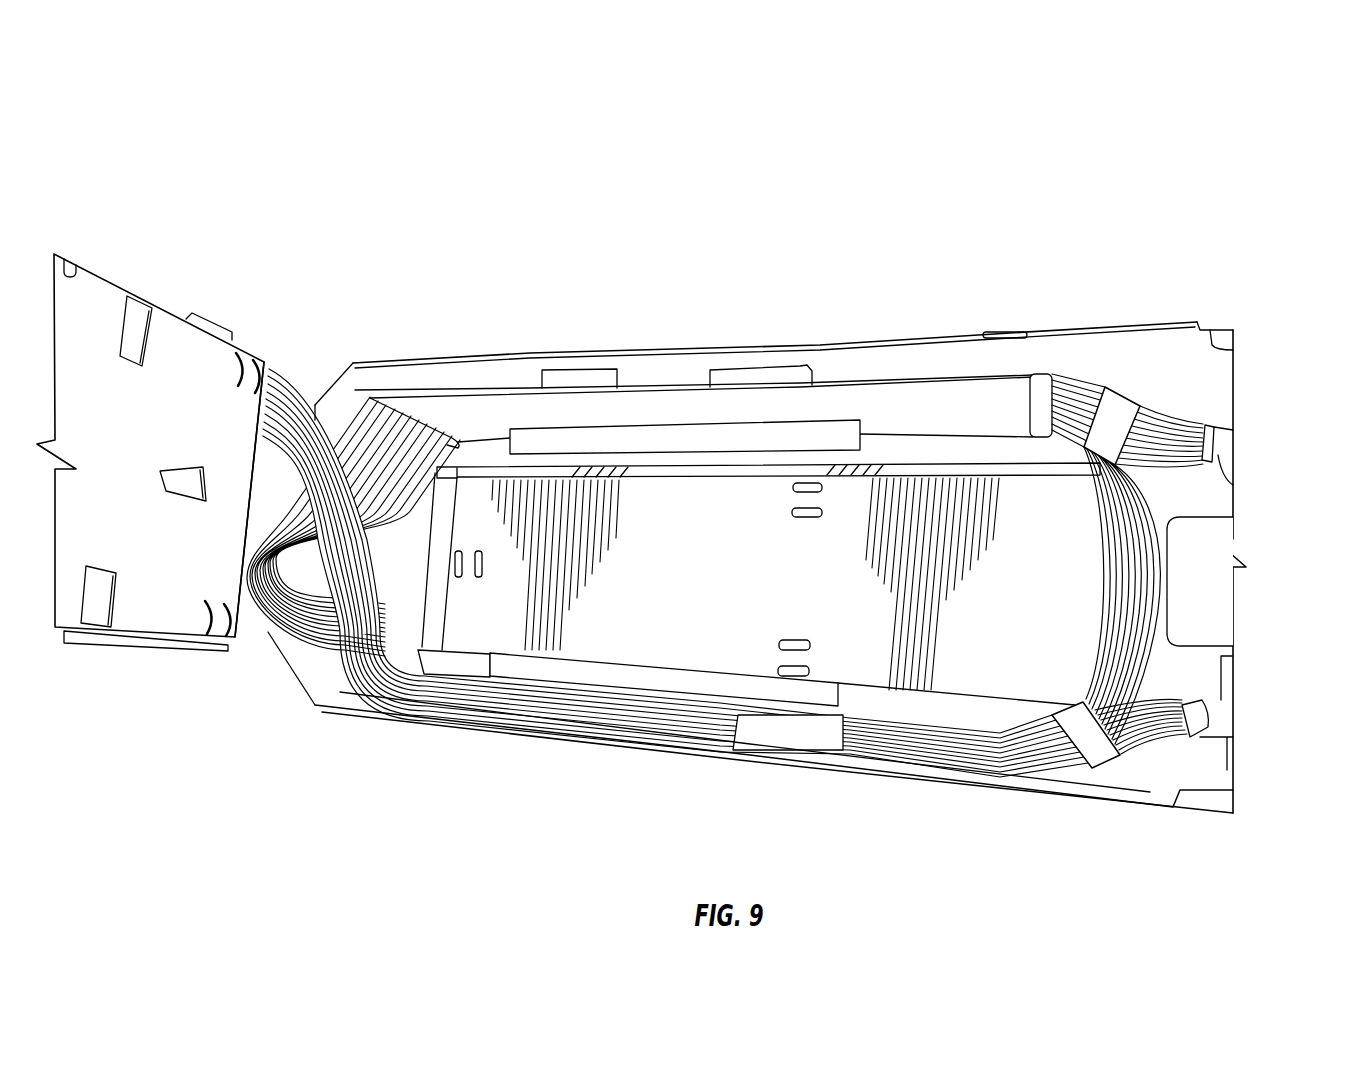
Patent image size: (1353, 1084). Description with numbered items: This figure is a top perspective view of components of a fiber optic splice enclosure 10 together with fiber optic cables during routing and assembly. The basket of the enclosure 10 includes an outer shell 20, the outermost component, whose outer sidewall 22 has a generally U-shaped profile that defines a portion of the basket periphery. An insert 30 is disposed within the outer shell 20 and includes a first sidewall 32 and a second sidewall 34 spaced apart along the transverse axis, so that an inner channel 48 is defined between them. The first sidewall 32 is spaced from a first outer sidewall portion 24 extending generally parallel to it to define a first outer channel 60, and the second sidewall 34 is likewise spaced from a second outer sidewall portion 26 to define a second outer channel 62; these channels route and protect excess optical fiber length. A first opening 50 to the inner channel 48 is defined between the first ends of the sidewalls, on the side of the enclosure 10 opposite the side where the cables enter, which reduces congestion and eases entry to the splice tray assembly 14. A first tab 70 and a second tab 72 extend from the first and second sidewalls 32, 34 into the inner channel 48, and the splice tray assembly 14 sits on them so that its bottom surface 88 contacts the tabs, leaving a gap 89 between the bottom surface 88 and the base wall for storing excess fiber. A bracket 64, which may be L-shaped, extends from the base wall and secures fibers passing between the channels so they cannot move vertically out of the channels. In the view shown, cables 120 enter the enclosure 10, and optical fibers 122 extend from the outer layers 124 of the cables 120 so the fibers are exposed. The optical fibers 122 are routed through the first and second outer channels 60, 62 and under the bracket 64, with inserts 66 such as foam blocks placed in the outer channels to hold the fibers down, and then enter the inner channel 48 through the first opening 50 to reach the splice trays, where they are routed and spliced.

The fiber optic splice enclosure 10 is at (1140, 187).
The splice tray assembly 14 is at (203, 284).
The bottom surface 88 is at (91, 300).
The outer shell 20 is at (1158, 305).
The outer sidewall 22 is at (1180, 324).
The first outer sidewall portion 24 is at (987, 792).
The second outer sidewall portion 26 is at (1075, 347).
The insert 30 is at (447, 405).
The first sidewall 32 is at (890, 712).
The second sidewall 34 is at (975, 400).
The inner channel 48 is at (752, 593).
The first opening 50 is at (348, 630).
The first outer channel 60 is at (953, 785).
The second outer channel 62 is at (897, 356).
The bracket 64 is at (1192, 596).
The inserts 66 is at (560, 378).
The first tab 70 is at (727, 697).
The second tab 72 is at (830, 433).
The gap 89 is at (858, 548).
The cables 120 is at (1224, 450).
The optical fiber 122 is at (1190, 414).
The outer layer 124 is at (1207, 458).